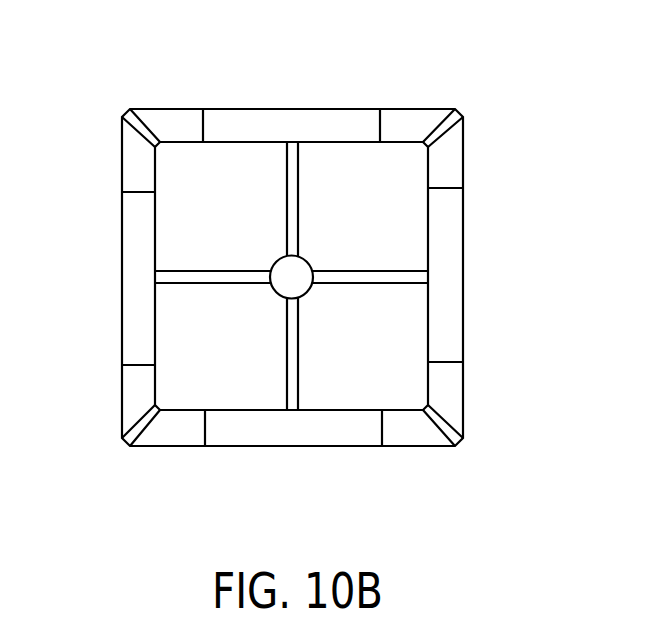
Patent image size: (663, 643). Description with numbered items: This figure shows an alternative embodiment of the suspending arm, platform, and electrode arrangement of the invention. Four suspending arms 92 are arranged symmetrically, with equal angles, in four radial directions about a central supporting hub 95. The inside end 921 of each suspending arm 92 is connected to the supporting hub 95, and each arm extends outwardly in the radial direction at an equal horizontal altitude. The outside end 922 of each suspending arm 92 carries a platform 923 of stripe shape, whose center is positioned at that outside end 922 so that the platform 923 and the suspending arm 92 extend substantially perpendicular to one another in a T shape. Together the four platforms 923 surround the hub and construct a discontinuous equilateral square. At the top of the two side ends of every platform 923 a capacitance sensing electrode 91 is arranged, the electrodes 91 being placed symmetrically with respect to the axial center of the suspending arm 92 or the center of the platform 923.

The capacitance sensing electrode 91 is at (173, 118).
The platform 923 is at (287, 118).
The suspending arm 92 is at (291, 276).
The outside end 922 is at (292, 150).
The inside end 921 is at (327, 271).
The supporting hub 95 is at (277, 263).